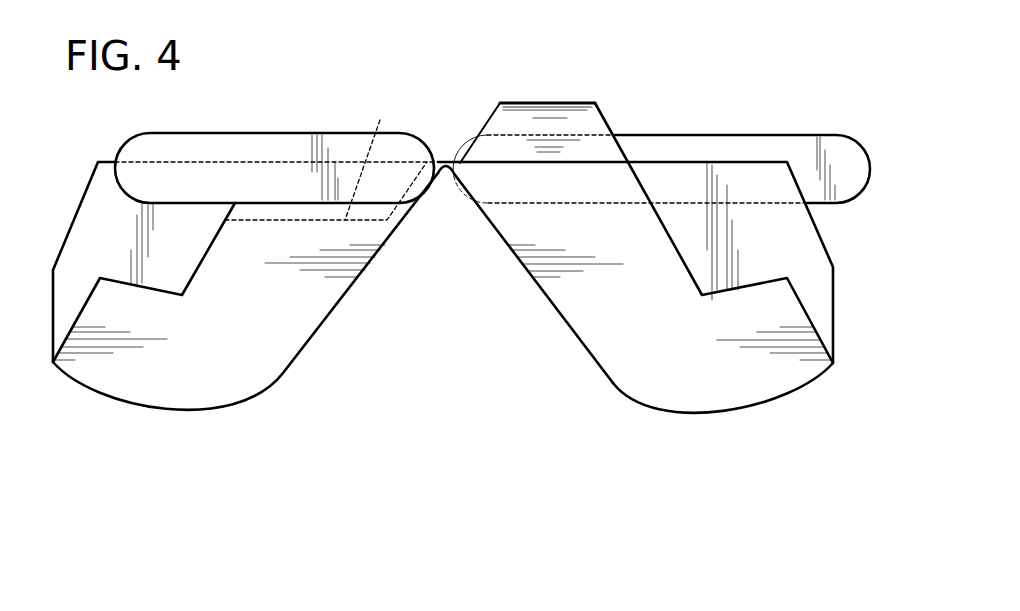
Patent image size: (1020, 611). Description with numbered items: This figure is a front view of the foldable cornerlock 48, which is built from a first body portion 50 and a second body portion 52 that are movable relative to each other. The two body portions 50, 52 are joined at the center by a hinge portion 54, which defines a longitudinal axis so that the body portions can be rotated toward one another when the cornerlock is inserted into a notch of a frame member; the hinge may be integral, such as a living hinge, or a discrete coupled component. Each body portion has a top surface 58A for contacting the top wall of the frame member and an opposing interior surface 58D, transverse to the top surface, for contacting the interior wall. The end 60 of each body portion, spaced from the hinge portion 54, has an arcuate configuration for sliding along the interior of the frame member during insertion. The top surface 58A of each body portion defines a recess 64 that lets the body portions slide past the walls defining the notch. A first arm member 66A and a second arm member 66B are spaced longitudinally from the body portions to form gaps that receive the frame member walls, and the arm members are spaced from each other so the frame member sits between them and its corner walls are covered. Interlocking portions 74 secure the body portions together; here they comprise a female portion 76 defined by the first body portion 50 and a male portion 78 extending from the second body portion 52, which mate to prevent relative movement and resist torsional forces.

The foldable cornerlock 48 is at (663, 88).
The first body portion 50 is at (659, 365).
The second body portion 52 is at (267, 335).
The hinge portion 54 is at (442, 164).
The top surface 58A is at (208, 236).
The interior surface 58D is at (442, 302).
The end 60 is at (149, 425).
The recess 64 is at (157, 272).
The first arm member 66A is at (768, 135).
The second arm member 66B is at (238, 134).
The interlocking portions 74 is at (536, 98).
The female portion 76 is at (370, 159).
The male portion 78 is at (588, 120).